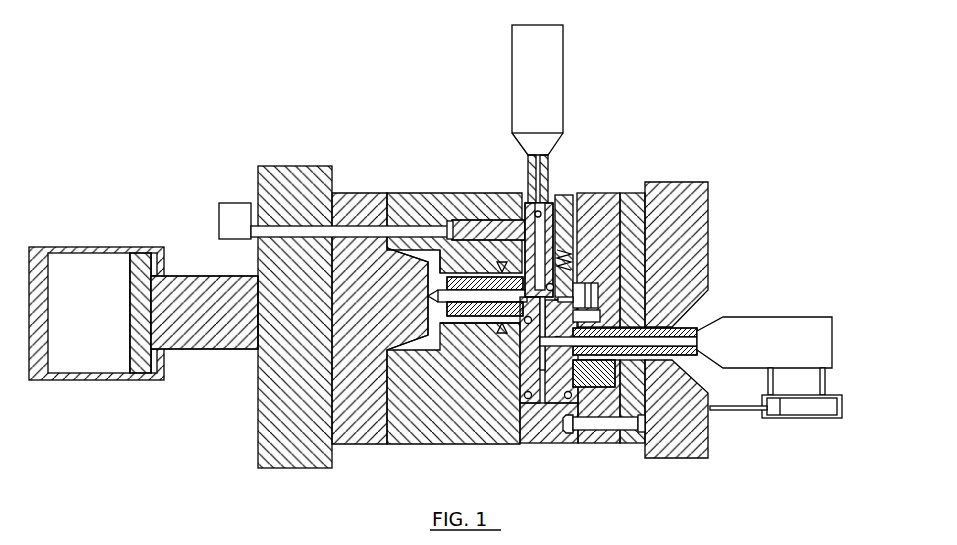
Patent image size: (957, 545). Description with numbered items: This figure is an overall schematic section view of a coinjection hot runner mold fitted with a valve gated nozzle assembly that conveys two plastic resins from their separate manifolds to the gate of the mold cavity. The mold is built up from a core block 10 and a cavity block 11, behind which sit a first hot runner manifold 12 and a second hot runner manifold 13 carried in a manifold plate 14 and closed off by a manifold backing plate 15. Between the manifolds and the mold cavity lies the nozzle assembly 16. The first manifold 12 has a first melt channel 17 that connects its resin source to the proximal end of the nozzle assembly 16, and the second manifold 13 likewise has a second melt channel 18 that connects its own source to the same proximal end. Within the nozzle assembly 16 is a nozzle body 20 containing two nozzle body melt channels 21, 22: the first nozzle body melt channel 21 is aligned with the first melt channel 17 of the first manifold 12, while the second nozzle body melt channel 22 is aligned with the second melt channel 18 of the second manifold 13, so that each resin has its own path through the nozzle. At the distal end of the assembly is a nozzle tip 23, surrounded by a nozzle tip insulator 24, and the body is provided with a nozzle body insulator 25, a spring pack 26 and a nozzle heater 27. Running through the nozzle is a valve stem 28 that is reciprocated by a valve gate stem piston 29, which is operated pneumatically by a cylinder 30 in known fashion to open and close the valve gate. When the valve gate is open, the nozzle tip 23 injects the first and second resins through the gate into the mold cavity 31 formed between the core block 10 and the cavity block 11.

The core block 10 is at (356, 212).
The cavity block 11 is at (408, 207).
The first hot runner manifold 12 is at (558, 398).
The second hot runner manifold 13 is at (576, 218).
The manifold plate 14 is at (606, 215).
The manifold backing plate 15 is at (632, 437).
The nozzle assembly 16 is at (451, 360).
The first melt channel 17 is at (533, 400).
The second melt channel 18 is at (557, 212).
The nozzle body 20 is at (498, 326).
The first nozzle body melt channel 21 is at (513, 337).
The second nozzle body melt channel 22 is at (450, 277).
The nozzle tip 23 is at (436, 333).
The nozzle tip insulator 24 is at (427, 314).
The nozzle body insulator 25 is at (503, 288).
The spring pack 26 is at (466, 290).
The nozzle heater 27 is at (453, 225).
The valve stem 28 is at (470, 303).
The valve gate stem piston 29 is at (592, 308).
The cylinder 30 is at (603, 300).
The mold cavity 31 is at (402, 248).